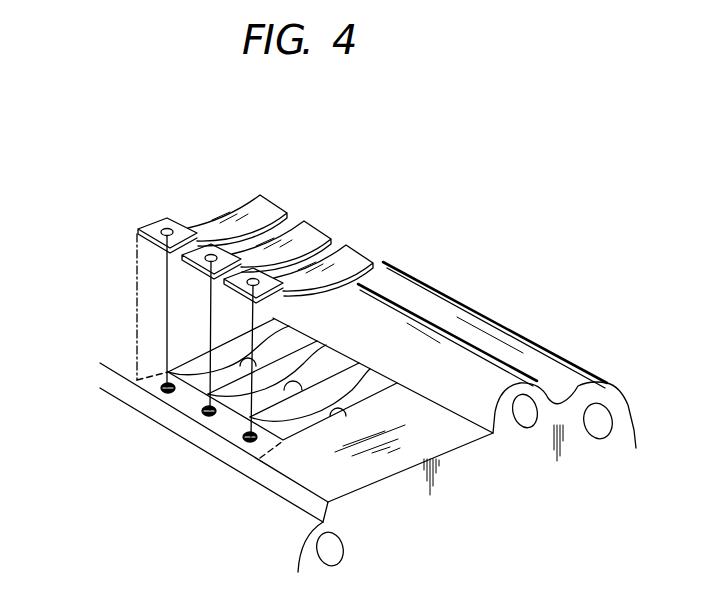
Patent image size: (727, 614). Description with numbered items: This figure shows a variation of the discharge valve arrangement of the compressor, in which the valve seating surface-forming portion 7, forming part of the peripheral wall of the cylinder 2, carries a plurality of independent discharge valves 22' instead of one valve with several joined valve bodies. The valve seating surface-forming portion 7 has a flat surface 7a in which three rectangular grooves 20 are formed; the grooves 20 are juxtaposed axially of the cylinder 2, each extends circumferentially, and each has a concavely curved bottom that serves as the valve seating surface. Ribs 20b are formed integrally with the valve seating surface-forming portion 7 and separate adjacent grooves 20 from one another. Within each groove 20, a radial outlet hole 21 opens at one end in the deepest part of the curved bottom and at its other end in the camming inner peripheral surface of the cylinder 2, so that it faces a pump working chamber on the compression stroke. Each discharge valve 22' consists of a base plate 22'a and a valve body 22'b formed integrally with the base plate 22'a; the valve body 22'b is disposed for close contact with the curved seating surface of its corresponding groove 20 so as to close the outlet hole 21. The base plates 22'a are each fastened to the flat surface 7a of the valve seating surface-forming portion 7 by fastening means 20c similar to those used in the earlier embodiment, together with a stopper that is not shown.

The cylinder 2 is at (567, 410).
The valve seating surface-forming portion 7 is at (386, 499).
The flat surface 7a is at (434, 420).
The groove 20 is at (204, 391).
The rib 20b is at (207, 395).
The fastening means 20c is at (205, 381).
The radial outlet hole 21 is at (277, 321).
The discharge valve 22' is at (210, 280).
The base plate 22'a is at (160, 264).
The valve body 22'b is at (295, 236).